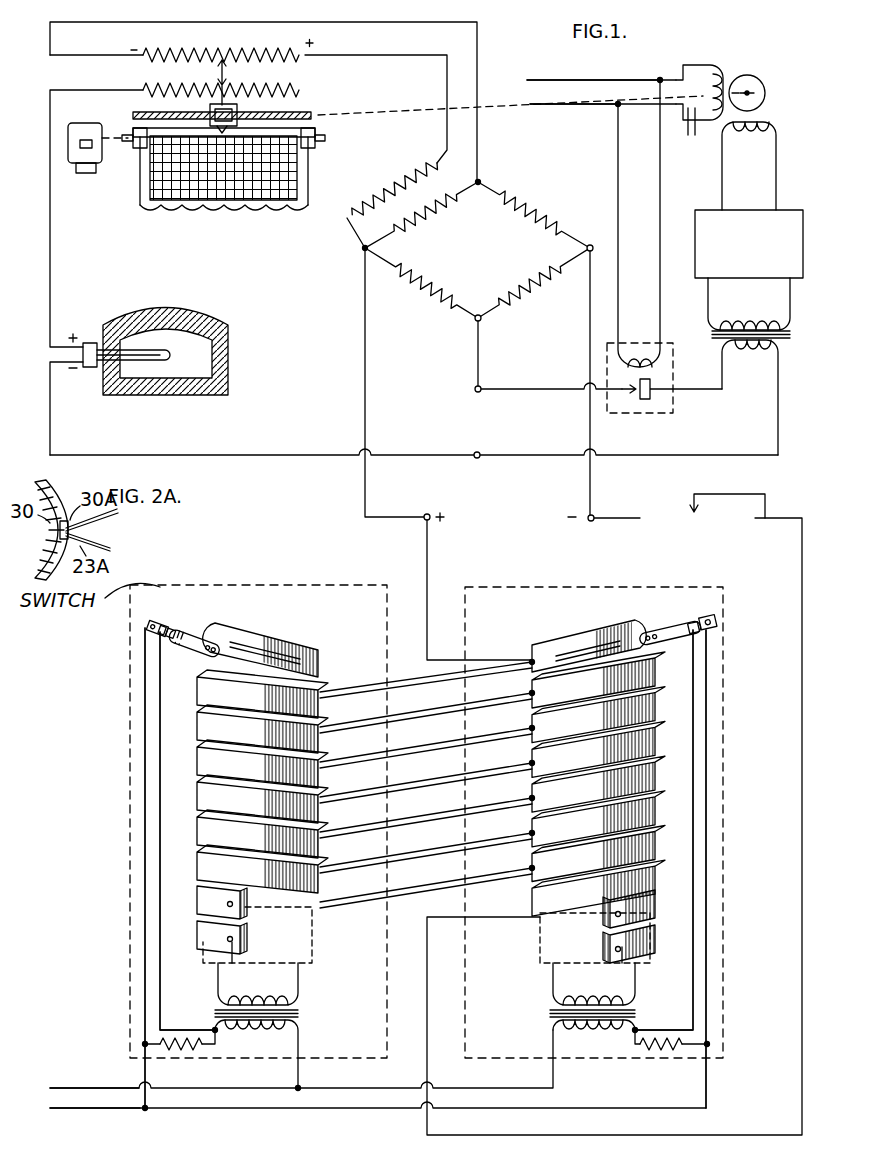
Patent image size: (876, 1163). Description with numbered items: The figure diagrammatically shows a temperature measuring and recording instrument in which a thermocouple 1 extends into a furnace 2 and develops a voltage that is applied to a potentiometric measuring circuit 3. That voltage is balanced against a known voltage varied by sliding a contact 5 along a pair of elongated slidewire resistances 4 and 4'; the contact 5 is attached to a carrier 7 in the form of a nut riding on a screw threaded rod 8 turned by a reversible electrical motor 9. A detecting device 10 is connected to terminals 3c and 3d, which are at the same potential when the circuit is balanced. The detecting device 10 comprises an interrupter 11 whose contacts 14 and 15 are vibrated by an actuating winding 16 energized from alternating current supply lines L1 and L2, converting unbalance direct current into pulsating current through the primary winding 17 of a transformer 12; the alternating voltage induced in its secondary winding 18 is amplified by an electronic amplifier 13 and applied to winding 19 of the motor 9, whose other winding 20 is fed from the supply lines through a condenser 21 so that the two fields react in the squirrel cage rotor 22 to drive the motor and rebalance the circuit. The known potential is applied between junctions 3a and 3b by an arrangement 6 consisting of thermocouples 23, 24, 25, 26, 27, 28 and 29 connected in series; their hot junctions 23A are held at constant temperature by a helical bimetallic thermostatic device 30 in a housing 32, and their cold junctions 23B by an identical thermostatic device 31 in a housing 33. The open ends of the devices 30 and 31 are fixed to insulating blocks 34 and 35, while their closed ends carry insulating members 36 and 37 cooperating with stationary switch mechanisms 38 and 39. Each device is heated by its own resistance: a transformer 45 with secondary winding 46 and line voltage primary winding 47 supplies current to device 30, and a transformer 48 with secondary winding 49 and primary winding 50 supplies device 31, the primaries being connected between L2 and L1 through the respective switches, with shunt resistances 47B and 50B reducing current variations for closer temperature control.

In FIG. 1, the thermocouple 1 is at (160, 352).
In FIG. 1, the furnace 2 is at (192, 306).
In FIG. 1, the potentiometric measuring circuit 3 is at (510, 244).
In FIG. 1, the junction 3a is at (424, 513).
In FIG. 1, the junction 3b is at (589, 514).
In FIG. 1, the terminal 3c is at (480, 388).
In FIG. 1, the terminal 3d is at (478, 453).
In FIG. 1, the slidewire resistance 4 is at (221, 44).
In FIG. 1, the slidewire resistance 4' is at (234, 81).
In FIG. 1, the contact 5 is at (226, 73).
In FIG. 2A, the arrangement 6 is at (365, 548).
In FIG. 1, the carrier 7 is at (238, 115).
In FIG. 1, the screw threaded rod 8 is at (303, 112).
In FIG. 1, the reversible electrical motor 9 is at (793, 62).
In FIG. 1, the detecting device 10 is at (841, 170).
In FIG. 1, the interrupter 11 is at (658, 413).
In FIG. 1, the transformer 12 is at (794, 334).
In FIG. 1, the electronic amplifier 13 is at (803, 249).
In FIG. 1, the contact 14 is at (628, 396).
In FIG. 1, the contact 15 is at (652, 381).
In FIG. 1, the actuating winding 16 is at (636, 352).
In FIG. 1, the primary winding 17 is at (748, 355).
In FIG. 1, the secondary winding 18 is at (735, 321).
In FIG. 1, the winding 19 is at (736, 131).
In FIG. 1, the winding 20 is at (707, 75).
In FIG. 1, the condenser 21 is at (690, 136).
In FIG. 1, the squirrel cage rotor 22 is at (758, 92).
In FIG. 2A, the thermocouple 23 is at (362, 897).
In FIG. 2A, the thermocouple 24 is at (362, 862).
In FIG. 2A, the thermocouple 25 is at (362, 827).
In FIG. 2A, the thermocouple 26 is at (362, 793).
In FIG. 2A, the thermocouple 27 is at (364, 757).
In FIG. 2A, the thermocouple 28 is at (364, 722).
In FIG. 2A, the thermocouple 29 is at (365, 685).
In FIG. 2A, the hot junction 23A is at (318, 680).
In FIG. 2A, the cold junction 23B is at (532, 662).
In FIG. 2A, the thermostatic device 30 is at (245, 638).
In FIG. 2A, the thermostatic device 31 is at (572, 633).
In FIG. 2A, the housing 32 is at (190, 585).
In FIG. 2A, the housing 33 is at (513, 585).
In FIG. 2A, the insulating block 34 is at (312, 960).
In FIG. 2A, the insulating block 35 is at (540, 923).
In FIG. 2A, the member 36 is at (187, 632).
In FIG. 2A, the member 37 is at (662, 628).
In FIG. 2A, the switch mechanism 38 is at (152, 618).
In FIG. 2A, the switch mechanism 39 is at (706, 618).
In FIG. 2A, the transformer 45 is at (298, 1013).
In FIG. 2A, the secondary winding 46 is at (250, 997).
In FIG. 2A, the primary winding 47 is at (288, 1031).
In FIG. 2A, the resistance 47B is at (184, 1052).
In FIG. 2A, the transformer 48 is at (636, 1015).
In FIG. 2A, the secondary winding 49 is at (614, 998).
In FIG. 2A, the primary winding 50 is at (623, 1034).
In FIG. 2A, the resistance 50B is at (668, 1052).
In FIG. 1, the alternating current supply line L1 is at (575, 80).
In FIG. 2A, the alternating current supply line L1 is at (95, 1115).
In FIG. 1, the alternating current supply line L2 is at (576, 106).
In FIG. 2A, the alternating current supply line L2 is at (65, 1088).